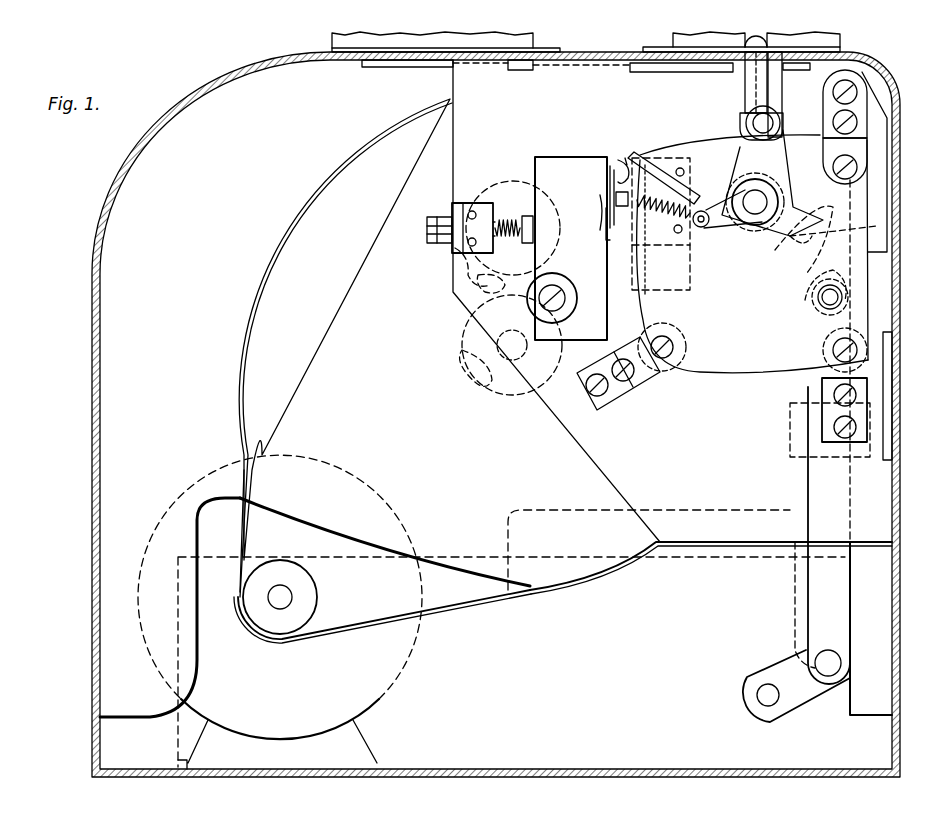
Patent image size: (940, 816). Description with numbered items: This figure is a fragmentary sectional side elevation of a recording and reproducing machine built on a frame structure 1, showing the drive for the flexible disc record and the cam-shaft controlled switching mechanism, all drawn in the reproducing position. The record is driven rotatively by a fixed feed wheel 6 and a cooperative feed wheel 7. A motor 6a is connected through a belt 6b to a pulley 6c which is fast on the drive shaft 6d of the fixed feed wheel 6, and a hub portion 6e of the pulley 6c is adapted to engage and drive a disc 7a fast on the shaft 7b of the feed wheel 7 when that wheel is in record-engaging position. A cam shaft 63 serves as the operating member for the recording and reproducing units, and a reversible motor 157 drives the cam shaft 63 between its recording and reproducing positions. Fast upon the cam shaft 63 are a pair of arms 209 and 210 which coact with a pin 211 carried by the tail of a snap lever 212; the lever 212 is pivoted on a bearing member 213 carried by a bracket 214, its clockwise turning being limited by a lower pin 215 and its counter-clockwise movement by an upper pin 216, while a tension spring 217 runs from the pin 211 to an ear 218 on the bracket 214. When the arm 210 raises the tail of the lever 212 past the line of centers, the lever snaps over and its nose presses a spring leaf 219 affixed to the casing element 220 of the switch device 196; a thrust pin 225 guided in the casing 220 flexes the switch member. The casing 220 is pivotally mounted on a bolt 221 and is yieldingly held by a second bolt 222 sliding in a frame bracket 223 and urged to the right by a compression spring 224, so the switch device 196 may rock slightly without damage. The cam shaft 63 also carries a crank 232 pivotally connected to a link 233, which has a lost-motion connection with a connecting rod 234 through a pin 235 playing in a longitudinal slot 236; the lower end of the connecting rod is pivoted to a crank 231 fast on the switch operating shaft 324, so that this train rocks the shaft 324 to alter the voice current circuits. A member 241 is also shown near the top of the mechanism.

The frame structure 1 is at (82, 399).
The fixed feed wheel 6 is at (470, 366).
The motor 6a is at (388, 676).
The belt 6b is at (452, 613).
The pulley 6c is at (534, 578).
The drive shaft 6d is at (508, 330).
The hub portion 6e is at (464, 338).
The cooperative feed wheel 7 is at (478, 288).
The disc 7a is at (456, 266).
The shaft 7b is at (550, 250).
The cam shaft 63 is at (754, 214).
The reversible motor 157 is at (704, 372).
The switch device 196 is at (550, 146).
The arm 209 is at (716, 196).
The arm 210 is at (798, 214).
The pin 211 is at (702, 228).
The snap lever 212 is at (624, 166).
The bearing member 213 is at (666, 172).
The bracket 214 is at (638, 156).
The lower pin 215 is at (677, 235).
The upper pin 216 is at (682, 158).
The tension spring 217 is at (645, 225).
The ear 218 is at (606, 210).
The spring leaf 219 is at (610, 186).
The casing element 220 is at (568, 156).
The bolt 221 is at (562, 306).
The bolt 222 is at (522, 212).
The frame bracket 223 is at (443, 212).
The compression spring 224 is at (480, 206).
The thrust pin 225 is at (616, 199).
The crank 231 is at (790, 665).
The crank 232 is at (786, 153).
The link 233 is at (820, 252).
The connecting rod 234 is at (812, 468).
The pin 235 is at (816, 308).
The longitudinal slot 236 is at (822, 340).
The push rod 241 is at (748, 82).
The switch operating shaft 324 is at (757, 696).